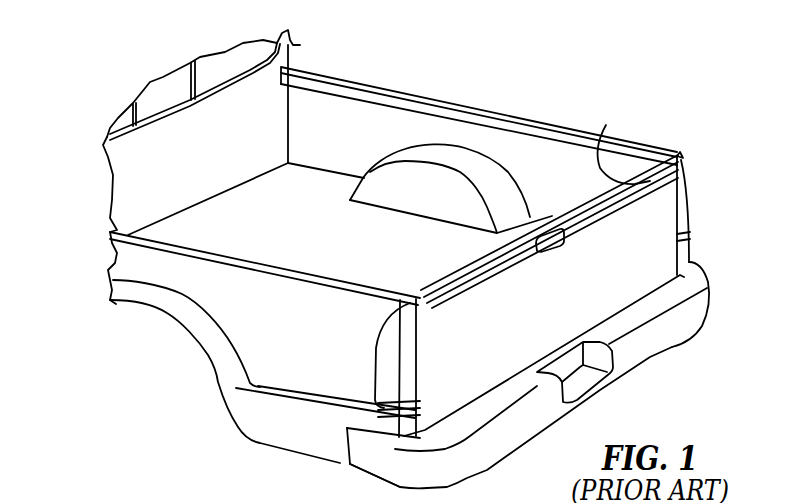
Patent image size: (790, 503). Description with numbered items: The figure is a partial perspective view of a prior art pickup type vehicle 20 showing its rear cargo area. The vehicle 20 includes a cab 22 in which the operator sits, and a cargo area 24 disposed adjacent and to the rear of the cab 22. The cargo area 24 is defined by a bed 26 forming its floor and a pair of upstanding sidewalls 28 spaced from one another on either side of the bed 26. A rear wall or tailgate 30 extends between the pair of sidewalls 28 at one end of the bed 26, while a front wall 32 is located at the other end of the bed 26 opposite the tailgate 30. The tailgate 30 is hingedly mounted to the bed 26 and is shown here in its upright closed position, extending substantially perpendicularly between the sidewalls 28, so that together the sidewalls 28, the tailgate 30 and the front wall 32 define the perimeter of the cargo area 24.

The pickup truck vehicle 20 is at (82, 154).
The cab 22 is at (294, 46).
The cargo area 24 is at (419, 79).
The bed 26 is at (287, 221).
The sidewalls 28 is at (520, 118).
The tailgate 30 is at (606, 125).
The front wall 32 is at (243, 127).